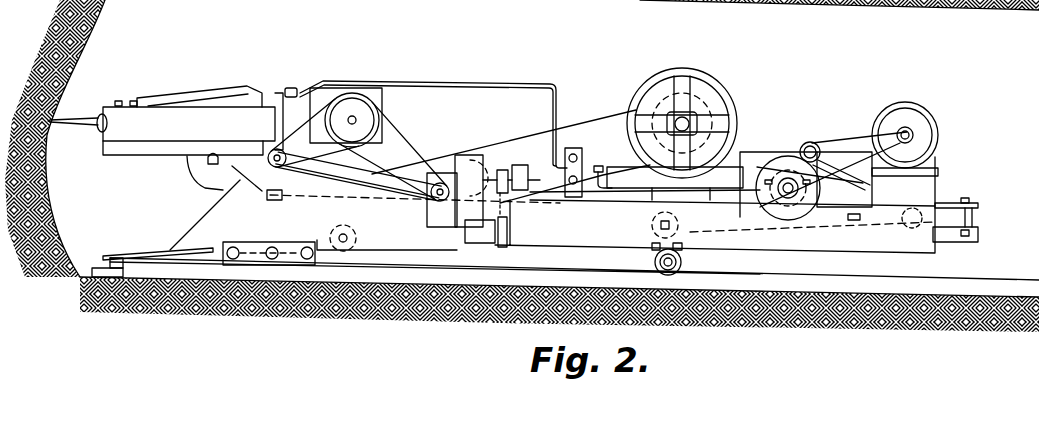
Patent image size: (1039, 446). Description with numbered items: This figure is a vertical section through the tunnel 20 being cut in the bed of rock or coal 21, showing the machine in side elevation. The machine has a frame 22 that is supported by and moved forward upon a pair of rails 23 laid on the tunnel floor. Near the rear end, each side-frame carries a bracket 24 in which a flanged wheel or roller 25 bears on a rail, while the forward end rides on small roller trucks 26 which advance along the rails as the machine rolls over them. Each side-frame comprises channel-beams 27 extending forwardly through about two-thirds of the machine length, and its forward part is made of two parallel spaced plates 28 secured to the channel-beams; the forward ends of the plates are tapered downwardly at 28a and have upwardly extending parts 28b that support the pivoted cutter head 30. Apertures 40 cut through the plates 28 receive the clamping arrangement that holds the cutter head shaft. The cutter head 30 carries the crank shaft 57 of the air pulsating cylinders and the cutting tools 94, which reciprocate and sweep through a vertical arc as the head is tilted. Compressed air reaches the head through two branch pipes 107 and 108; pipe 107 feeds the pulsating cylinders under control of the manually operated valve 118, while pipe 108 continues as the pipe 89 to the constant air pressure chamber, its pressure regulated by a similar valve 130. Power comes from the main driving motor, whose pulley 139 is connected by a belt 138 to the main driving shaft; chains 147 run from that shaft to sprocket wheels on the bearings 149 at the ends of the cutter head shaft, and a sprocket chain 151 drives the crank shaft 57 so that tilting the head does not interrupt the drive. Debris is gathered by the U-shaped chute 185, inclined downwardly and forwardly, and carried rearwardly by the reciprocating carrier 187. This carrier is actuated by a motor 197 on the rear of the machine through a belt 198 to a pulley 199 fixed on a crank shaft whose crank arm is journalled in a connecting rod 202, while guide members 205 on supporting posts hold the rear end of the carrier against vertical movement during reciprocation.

The tunnel 20 is at (663, 113).
The bed of rock or coal 21 is at (55, 138).
The frame 22 is at (715, 205).
The rails 23 is at (765, 287).
The bracket 24 is at (688, 248).
The flanged wheel or roller 25 is at (657, 264).
The roller trucks 26 is at (290, 265).
The channel-beams 27 is at (883, 242).
The plates 28 is at (213, 222).
The tapered or pointed forward ends of the plates 28a is at (193, 240).
The upwardly extending parts 28b is at (240, 178).
The cutter head 30 is at (256, 97).
The apertures 40 is at (266, 195).
The crank shaft 57 is at (358, 120).
The pipe 89 is at (183, 162).
The cutting tool 94 is at (72, 120).
The branch pipe 107 is at (562, 88).
The branch pipe 108 is at (589, 195).
The manually operated valve 118 is at (579, 148).
The valve 130 is at (525, 179).
The belt 138 is at (623, 110).
The pulley 139 is at (700, 108).
The chains 147 is at (360, 190).
The bearings 149 is at (277, 168).
The sprocket chain 151 is at (380, 153).
The chute 185 is at (100, 268).
The reciprocating carrier 187 is at (133, 251).
The motor 197 is at (910, 110).
The belt 198 is at (853, 137).
The pulley 199 is at (775, 170).
The connecting rod 202 is at (836, 160).
The guide members 205 is at (953, 200).